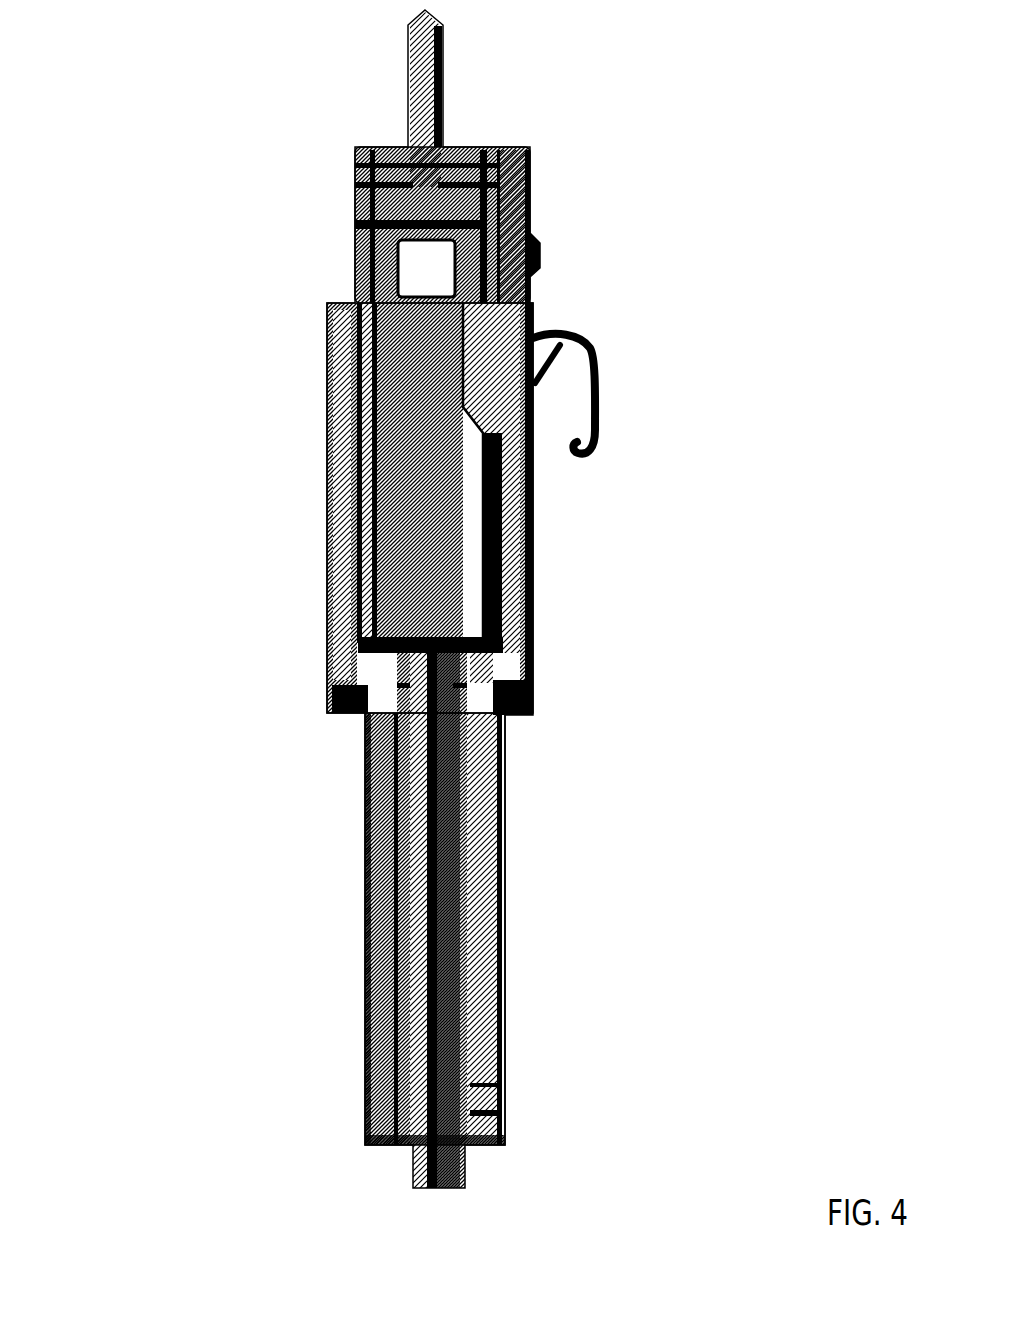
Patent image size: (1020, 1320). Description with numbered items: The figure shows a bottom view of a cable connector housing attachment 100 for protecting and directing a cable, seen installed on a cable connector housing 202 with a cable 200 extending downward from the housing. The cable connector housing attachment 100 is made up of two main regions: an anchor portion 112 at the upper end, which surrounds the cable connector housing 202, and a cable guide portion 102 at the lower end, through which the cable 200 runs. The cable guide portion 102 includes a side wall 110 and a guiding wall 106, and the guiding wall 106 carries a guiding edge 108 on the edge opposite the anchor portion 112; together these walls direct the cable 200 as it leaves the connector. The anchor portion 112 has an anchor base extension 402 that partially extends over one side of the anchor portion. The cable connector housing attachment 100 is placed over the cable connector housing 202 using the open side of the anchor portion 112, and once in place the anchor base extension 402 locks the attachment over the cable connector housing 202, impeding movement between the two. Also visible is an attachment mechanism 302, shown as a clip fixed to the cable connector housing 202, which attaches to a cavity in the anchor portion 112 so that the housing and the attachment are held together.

The cable connector housing attachment 100 is at (238, 322).
The cable guide portion 102 is at (647, 1135).
The guiding wall 106 is at (365, 892).
The guiding edge 108 is at (382, 965).
The side wall 110 is at (503, 910).
The anchor portion 112 is at (655, 702).
The cable 200 is at (423, 1152).
The cable connector housing 202 is at (420, 530).
The attachment mechanism 302 is at (590, 343).
The anchor base extension 402 is at (493, 347).